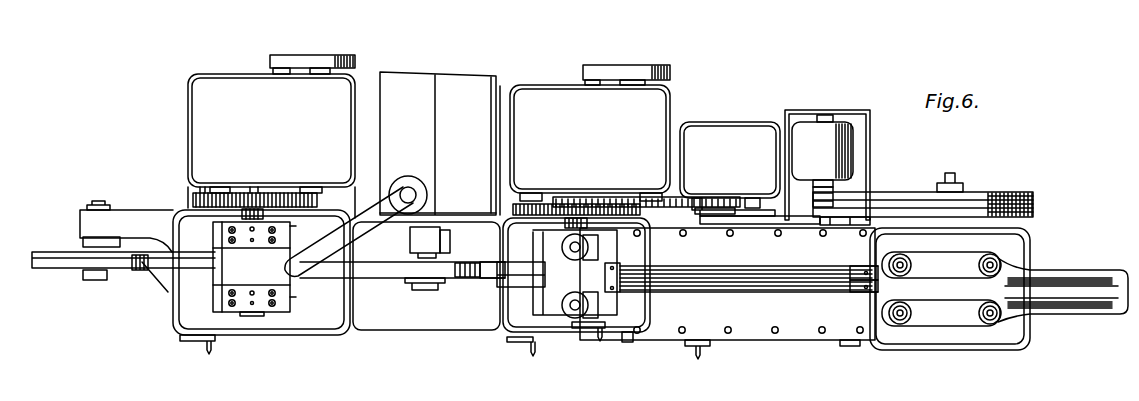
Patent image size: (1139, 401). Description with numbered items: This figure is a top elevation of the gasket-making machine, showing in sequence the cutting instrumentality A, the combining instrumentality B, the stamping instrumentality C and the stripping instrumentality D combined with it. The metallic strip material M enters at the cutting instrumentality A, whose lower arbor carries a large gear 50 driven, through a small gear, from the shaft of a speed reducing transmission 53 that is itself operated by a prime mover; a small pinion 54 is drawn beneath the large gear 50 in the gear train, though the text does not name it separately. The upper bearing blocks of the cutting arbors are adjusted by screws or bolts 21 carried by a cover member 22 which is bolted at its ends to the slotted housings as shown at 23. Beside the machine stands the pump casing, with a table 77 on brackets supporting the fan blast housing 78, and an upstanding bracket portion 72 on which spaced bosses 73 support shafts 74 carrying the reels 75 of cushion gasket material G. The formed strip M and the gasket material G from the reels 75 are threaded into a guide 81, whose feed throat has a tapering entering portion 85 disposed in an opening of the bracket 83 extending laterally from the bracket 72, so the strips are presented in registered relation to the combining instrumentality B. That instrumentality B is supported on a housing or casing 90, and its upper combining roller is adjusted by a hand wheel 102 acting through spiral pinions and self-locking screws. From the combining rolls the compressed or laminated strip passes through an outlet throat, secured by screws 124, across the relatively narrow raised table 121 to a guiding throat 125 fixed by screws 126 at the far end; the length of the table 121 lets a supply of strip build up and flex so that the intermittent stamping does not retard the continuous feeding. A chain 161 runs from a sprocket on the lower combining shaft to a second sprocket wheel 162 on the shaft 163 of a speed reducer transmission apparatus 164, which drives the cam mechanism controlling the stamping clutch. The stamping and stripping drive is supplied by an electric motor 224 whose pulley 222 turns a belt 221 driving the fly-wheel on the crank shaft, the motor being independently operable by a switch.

The speed reducing transmission 53 is at (271, 136).
The large gear 50 is at (282, 193).
The pinion 54 is at (230, 212).
The cutting instrumentality A is at (261, 285).
The cover member 22 is at (251, 267).
The bolted connection 23 is at (290, 228).
The screws or bolts 21 is at (250, 314).
The metallic strip material M is at (157, 265).
The fan blast housing 78 is at (438, 143).
The table 77 is at (501, 88).
The bracket 83 is at (489, 208).
The cushion gasket material G is at (402, 268).
The bosses 73 is at (410, 243).
The bracket portion 72 is at (455, 230).
The shafts 74 is at (428, 283).
The reels 75 is at (462, 280).
The tapering entering portion 85 is at (486, 283).
The chain 161 is at (662, 212).
The combining instrumentality B is at (576, 291).
The guide 81 is at (514, 266).
The hand wheel 102 is at (592, 329).
The housing or casing 90 is at (630, 334).
The screws 124 is at (616, 278).
The speed reducer transmission apparatus 164 is at (730, 169).
The shaft 163 is at (718, 196).
The second sprocket wheel 162 is at (733, 212).
The electric motor 224 is at (817, 126).
The pulley 222 is at (835, 192).
The belt 221 is at (1000, 182).
The stamping instrumentality C is at (950, 169).
The table 121 is at (738, 282).
The guiding throat 125 is at (862, 266).
The screws 126 is at (860, 292).
The stripping instrumentality D is at (1040, 268).